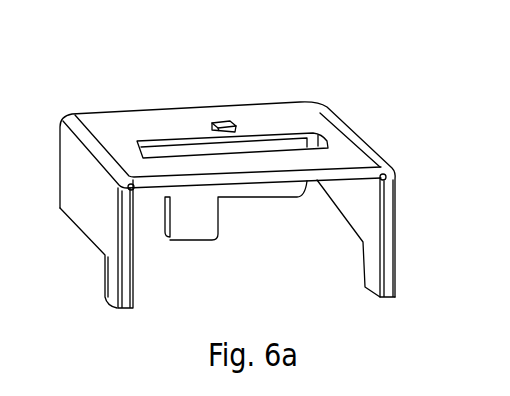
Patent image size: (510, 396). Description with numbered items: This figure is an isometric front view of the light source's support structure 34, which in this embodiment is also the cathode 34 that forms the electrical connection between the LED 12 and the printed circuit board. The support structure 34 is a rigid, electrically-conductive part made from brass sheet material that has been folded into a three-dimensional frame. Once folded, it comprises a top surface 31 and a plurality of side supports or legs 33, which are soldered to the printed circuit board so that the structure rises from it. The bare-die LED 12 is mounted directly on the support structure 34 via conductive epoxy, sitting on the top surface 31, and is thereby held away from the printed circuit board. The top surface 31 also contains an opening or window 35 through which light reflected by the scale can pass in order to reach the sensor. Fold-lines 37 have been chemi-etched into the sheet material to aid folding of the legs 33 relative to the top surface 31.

The support structure/cathode 34 is at (247, 166).
The top surface 31 is at (240, 165).
The opening/window 35 is at (270, 138).
The LED 12 is at (223, 122).
The side supports (legs) 33 is at (105, 233).
The fold-lines 37 is at (381, 179).